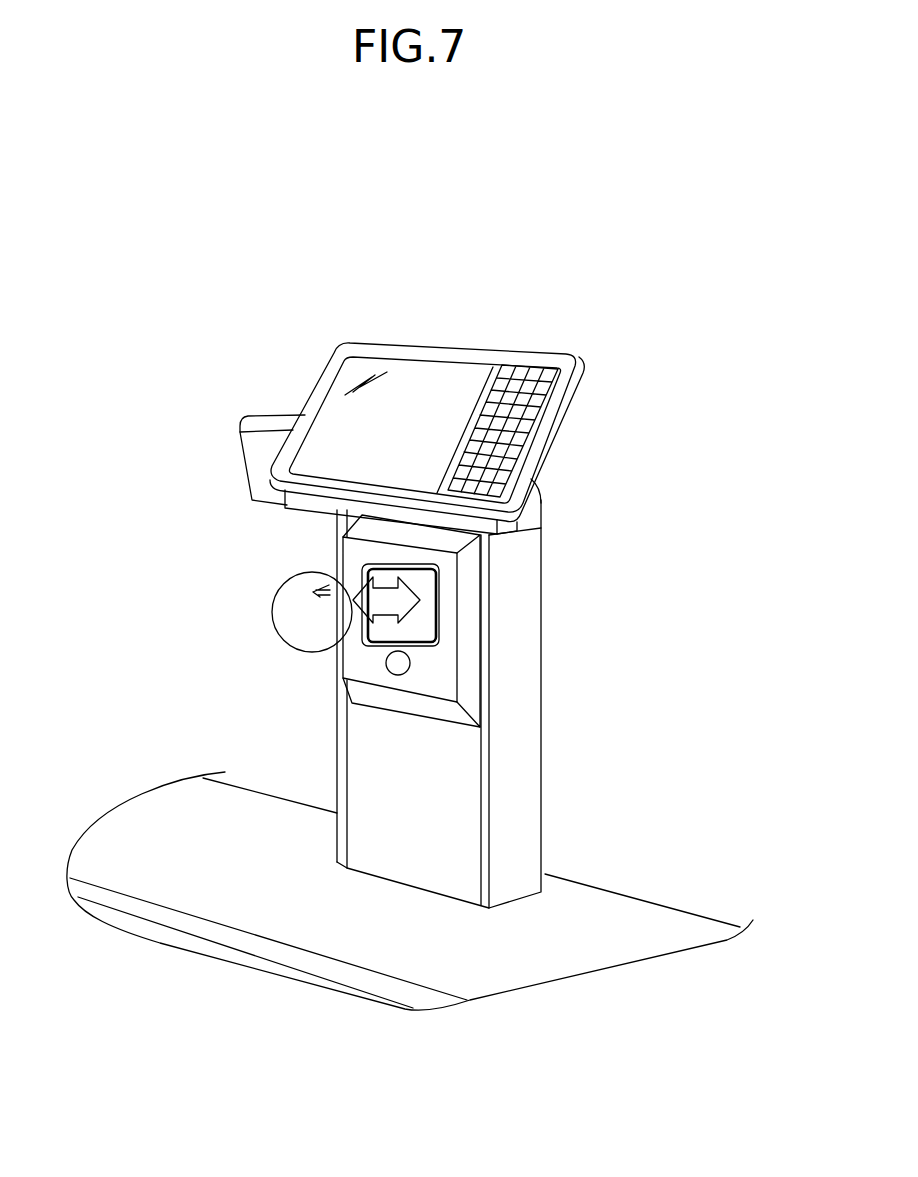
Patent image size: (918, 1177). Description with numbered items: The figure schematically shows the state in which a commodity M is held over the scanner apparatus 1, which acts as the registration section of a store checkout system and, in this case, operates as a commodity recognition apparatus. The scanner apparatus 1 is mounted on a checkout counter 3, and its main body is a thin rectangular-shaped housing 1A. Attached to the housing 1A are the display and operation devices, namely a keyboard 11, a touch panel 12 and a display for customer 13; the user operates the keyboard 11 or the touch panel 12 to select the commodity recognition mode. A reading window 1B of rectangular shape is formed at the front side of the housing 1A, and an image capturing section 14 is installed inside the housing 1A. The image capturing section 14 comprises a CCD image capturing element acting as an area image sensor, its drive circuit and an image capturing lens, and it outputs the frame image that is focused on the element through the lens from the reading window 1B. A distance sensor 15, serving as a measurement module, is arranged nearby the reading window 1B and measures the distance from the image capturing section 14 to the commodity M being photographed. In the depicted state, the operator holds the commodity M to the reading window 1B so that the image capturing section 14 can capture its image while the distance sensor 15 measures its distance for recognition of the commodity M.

The scanner apparatus 1 is at (567, 554).
The housing 1A is at (530, 695).
The reading window 1B is at (430, 612).
The checkout counter 3 is at (632, 912).
The keyboard 11 is at (552, 366).
The touch panel 12 is at (441, 368).
The display for customer 13 is at (258, 454).
The image capturing section 14 is at (358, 563).
The distance sensor 15 is at (398, 663).
The commodity M is at (282, 612).